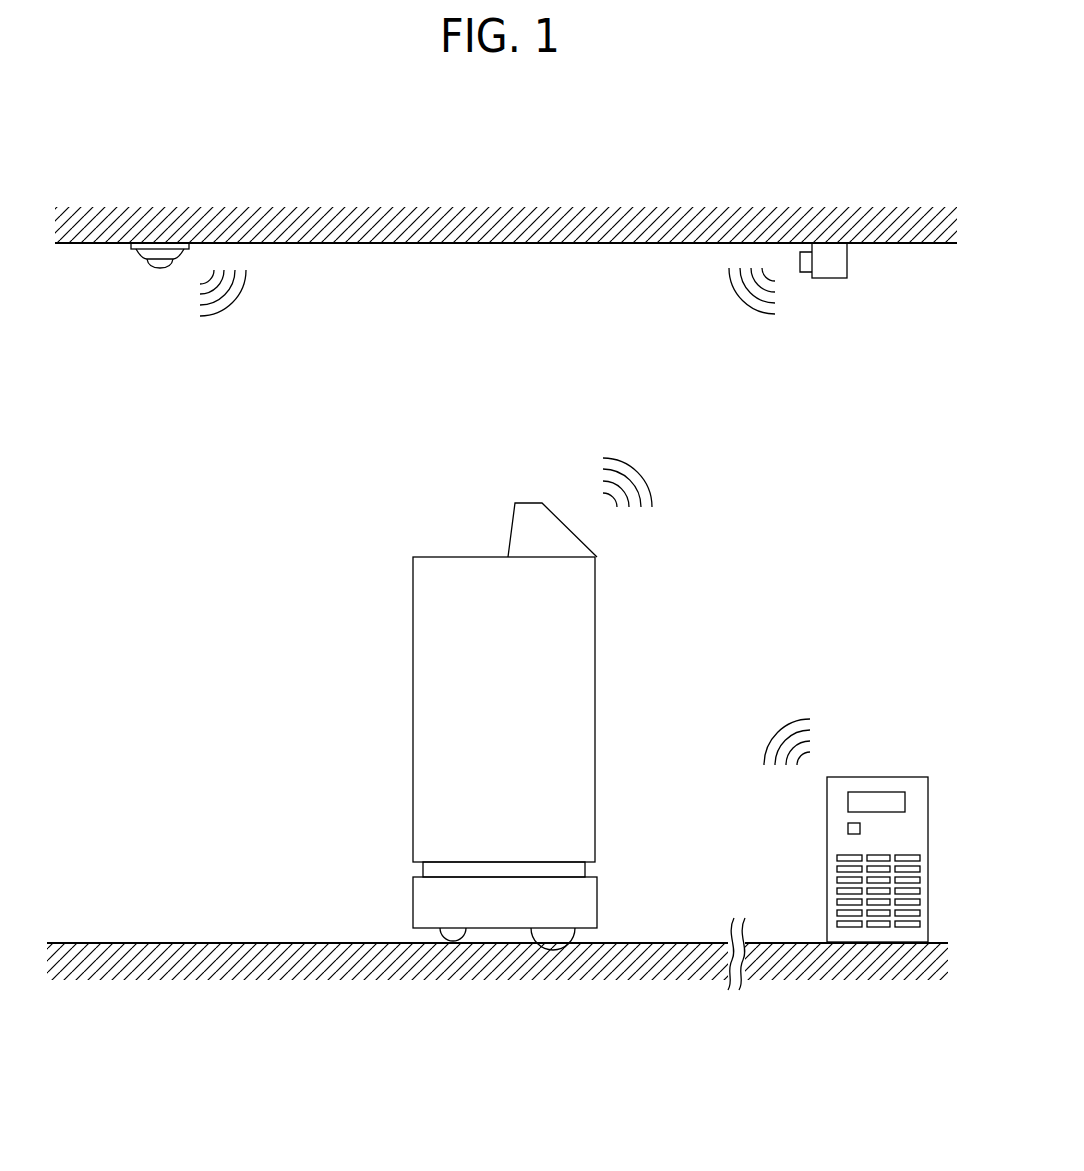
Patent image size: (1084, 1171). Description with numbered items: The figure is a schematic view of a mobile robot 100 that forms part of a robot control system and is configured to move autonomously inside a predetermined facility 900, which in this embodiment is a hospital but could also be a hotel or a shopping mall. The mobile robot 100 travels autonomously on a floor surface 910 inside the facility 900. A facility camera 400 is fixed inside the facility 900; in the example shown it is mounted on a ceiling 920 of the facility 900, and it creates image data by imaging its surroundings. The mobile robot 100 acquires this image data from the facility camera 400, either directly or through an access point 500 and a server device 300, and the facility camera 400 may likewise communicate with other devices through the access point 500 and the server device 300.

The mobile robot 100 is at (664, 602).
The server device 300 is at (907, 777).
The facility camera 400 is at (137, 259).
The access point 500 is at (832, 280).
The predetermined facility 900 is at (263, 196).
The floor surface 910 is at (338, 943).
The ceiling 920 is at (340, 245).